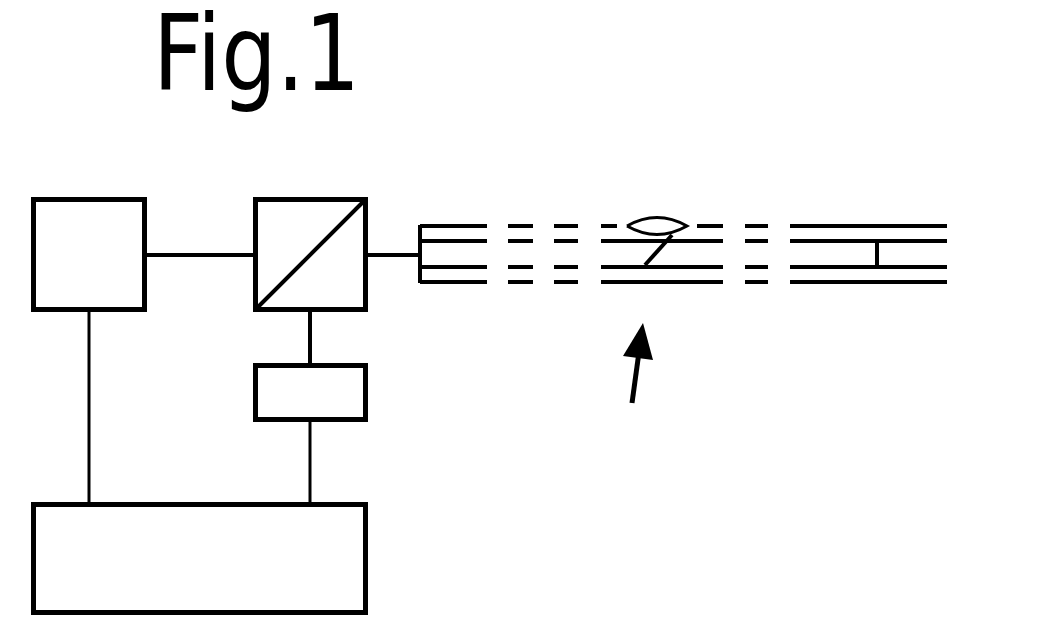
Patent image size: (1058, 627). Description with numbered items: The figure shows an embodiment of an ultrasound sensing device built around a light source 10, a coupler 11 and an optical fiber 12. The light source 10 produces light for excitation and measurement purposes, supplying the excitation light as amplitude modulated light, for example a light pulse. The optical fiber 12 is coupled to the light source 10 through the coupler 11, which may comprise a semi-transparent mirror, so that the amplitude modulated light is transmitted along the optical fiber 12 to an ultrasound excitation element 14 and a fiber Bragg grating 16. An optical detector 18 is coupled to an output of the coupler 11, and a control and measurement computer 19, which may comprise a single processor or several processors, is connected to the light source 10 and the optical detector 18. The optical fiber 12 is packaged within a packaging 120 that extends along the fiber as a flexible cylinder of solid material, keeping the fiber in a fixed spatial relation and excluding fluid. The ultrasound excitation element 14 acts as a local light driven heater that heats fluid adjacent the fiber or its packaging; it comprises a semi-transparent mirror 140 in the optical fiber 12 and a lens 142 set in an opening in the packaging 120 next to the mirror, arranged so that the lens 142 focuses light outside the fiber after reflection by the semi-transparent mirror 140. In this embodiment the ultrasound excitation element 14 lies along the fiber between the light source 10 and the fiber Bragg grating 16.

The light source 10 is at (88, 197).
The coupler 11 is at (322, 197).
The optical fiber 12 is at (465, 253).
The packaging 120 is at (462, 226).
The ultrasound excitation element 14 is at (629, 381).
The semi-transparent mirror 140 is at (655, 262).
The lens 142 is at (656, 217).
The fiber Bragg grating 16 is at (879, 248).
The optical detector 18 is at (253, 393).
The control and measurement computer 19 is at (368, 558).